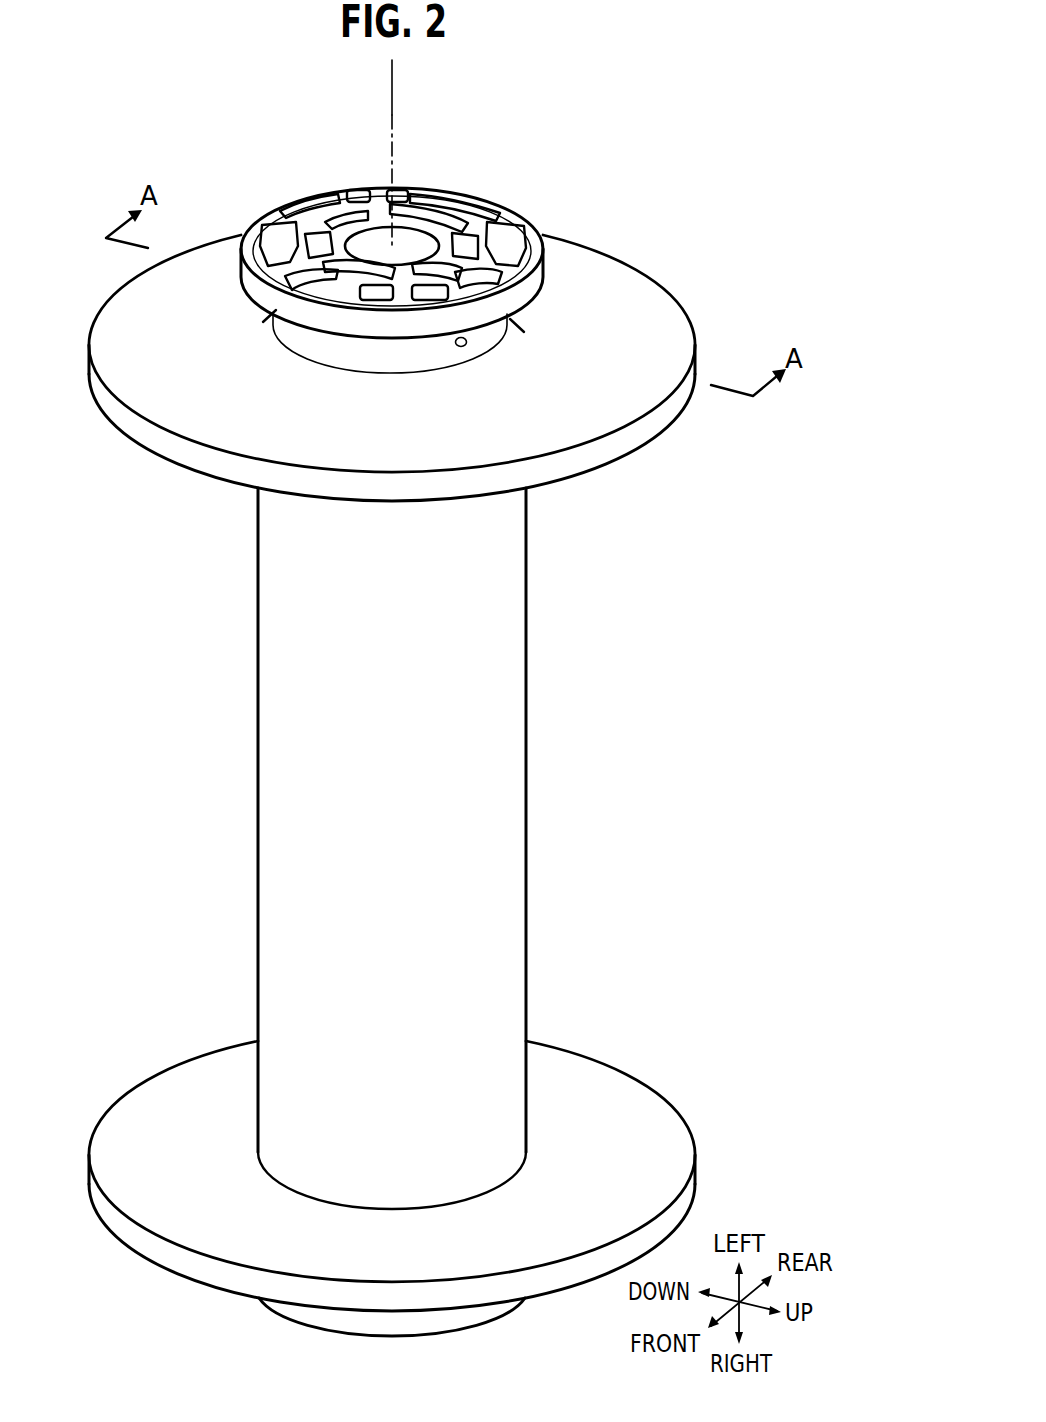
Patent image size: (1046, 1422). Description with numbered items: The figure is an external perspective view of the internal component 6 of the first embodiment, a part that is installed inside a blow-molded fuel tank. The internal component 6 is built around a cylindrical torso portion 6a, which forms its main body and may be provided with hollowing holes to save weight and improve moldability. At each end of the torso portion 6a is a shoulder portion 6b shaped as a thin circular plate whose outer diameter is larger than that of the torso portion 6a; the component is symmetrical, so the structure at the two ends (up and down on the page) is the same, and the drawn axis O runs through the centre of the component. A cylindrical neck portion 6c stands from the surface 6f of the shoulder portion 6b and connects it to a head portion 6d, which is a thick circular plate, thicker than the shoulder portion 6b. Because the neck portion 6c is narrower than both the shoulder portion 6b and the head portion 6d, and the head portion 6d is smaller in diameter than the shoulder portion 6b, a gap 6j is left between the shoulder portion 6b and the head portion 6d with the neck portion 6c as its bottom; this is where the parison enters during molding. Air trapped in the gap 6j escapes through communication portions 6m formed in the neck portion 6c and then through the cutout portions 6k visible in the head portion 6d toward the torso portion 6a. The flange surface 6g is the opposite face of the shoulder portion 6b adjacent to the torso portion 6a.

The internal component 6 is at (425, 712).
The torso portion 6a is at (517, 668).
The shoulder portion 6b is at (425, 775).
The neck portion 6c is at (348, 367).
The head portion 6d is at (405, 754).
The surface of the shoulder portion 6f is at (162, 314).
The flange inner surface 6g is at (160, 1100).
The gap 6j is at (262, 345).
The cutout portion 6k is at (312, 218).
The communication portion 6m is at (468, 343).
The central axis O is at (390, 97).